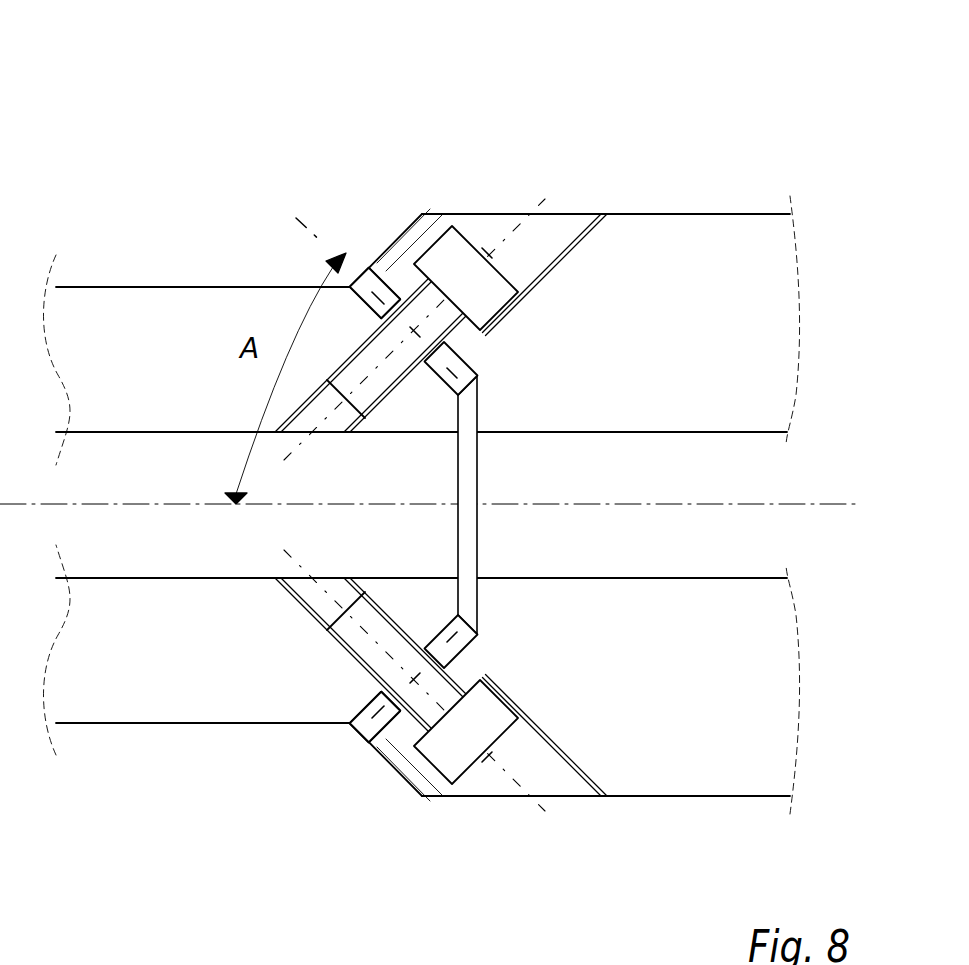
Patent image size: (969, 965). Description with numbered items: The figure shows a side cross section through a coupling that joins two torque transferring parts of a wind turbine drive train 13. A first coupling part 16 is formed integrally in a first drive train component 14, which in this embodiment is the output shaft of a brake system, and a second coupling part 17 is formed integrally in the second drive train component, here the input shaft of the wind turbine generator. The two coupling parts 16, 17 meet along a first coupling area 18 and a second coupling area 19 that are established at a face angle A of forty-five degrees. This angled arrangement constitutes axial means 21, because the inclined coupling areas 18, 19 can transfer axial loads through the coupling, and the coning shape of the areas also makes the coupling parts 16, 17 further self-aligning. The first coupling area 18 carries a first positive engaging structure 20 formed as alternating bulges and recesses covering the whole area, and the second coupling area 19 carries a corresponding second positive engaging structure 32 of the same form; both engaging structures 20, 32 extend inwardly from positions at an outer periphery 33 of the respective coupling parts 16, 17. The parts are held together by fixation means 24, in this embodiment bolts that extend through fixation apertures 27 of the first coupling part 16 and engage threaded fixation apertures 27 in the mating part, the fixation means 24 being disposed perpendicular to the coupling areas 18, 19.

The wind turbine drive train 13 is at (677, 240).
The first drive train component 14 is at (130, 308).
The first coupling part 16 is at (305, 698).
The second coupling part 17 is at (410, 292).
The first coupling area 18 is at (357, 724).
The second coupling area 19 is at (383, 737).
The first positive engaging structure 20 is at (378, 733).
The axial means 21 is at (366, 270).
The fixation means 24 is at (470, 725).
The fixation apertures 27 is at (432, 206).
The second positive engaging structure 32 is at (375, 717).
The outer periphery 33 is at (365, 273).